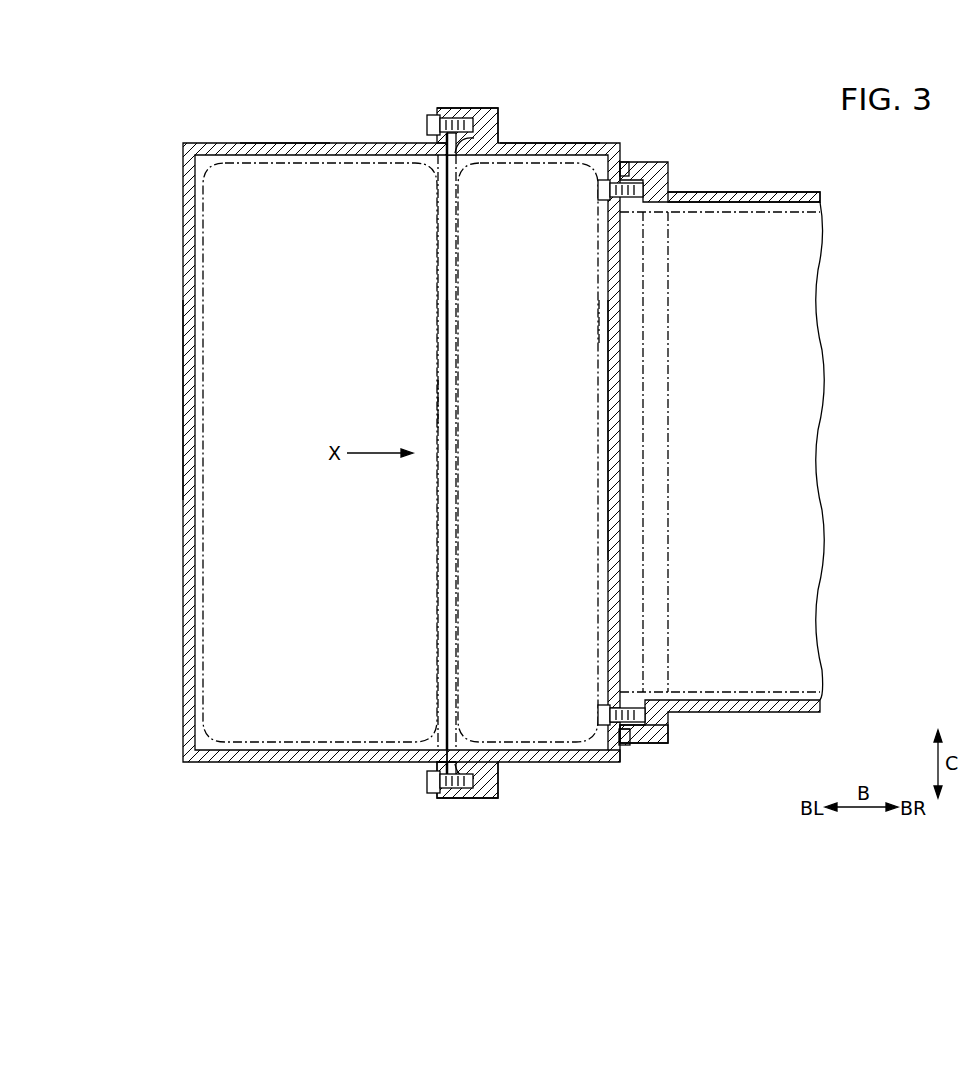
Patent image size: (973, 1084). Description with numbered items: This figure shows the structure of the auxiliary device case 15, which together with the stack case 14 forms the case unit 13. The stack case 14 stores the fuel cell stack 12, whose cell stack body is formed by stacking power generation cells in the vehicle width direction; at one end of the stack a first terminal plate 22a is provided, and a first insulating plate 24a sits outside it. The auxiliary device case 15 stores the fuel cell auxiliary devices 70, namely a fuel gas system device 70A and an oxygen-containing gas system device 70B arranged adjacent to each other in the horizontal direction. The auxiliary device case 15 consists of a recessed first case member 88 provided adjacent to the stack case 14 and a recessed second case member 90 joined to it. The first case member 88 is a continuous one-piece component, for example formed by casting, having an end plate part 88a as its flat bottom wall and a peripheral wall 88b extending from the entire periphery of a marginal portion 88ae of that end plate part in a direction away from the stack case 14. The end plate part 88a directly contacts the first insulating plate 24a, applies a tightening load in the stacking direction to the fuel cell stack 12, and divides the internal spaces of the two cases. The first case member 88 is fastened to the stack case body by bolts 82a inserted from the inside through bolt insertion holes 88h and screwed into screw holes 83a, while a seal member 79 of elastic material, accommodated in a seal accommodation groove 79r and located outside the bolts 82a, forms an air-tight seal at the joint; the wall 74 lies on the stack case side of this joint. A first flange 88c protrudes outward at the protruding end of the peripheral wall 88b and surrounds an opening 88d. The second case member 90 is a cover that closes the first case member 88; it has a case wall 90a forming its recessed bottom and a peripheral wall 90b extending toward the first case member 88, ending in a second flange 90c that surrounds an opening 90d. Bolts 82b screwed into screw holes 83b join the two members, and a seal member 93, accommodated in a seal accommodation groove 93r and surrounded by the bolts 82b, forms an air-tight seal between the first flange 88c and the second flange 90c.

The fuel cell stack 12 is at (74, 152).
The case unit 13 is at (720, 134).
The stack case 14 is at (671, 158).
The auxiliary device case 15 is at (637, 133).
The first terminal plate 22a is at (662, 438).
The first insulating plate 24a is at (634, 478).
The fuel cell auxiliary devices 70 is at (600, 365).
The fuel gas system device 70A is at (605, 322).
The oxygen-containing gas system device 70B is at (442, 407).
The lower wall 74 is at (745, 712).
The seal member 79 is at (628, 742).
The seal accommodation groove 79r is at (618, 737).
The bolts 82a is at (598, 191).
The bolts 82b is at (427, 122).
The screw holes 83a is at (628, 705).
The screw holes 83b is at (462, 785).
The first case member 88 is at (587, 138).
The end plate part 88a is at (608, 429).
The marginal portion 88ae is at (622, 748).
The peripheral wall 88b is at (548, 143).
The first flange 88c is at (480, 108).
The opening 88d is at (453, 385).
The bolt insertion holes 88h is at (600, 712).
The second case member 90 is at (221, 138).
The case wall 90a is at (183, 386).
The peripheral wall 90b is at (283, 148).
The second flange 90c is at (444, 108).
The opening 90d is at (446, 482).
The seal member 93 is at (470, 145).
The seal accommodation groove 93r is at (441, 764).